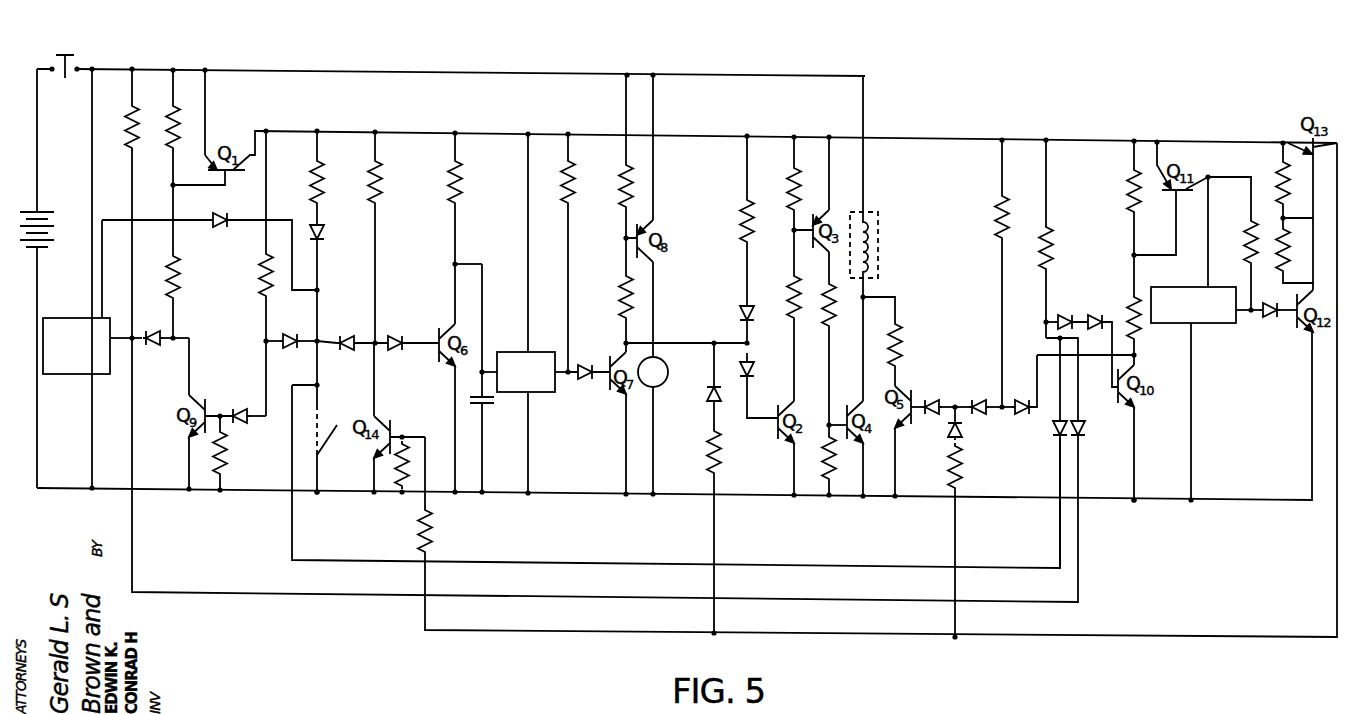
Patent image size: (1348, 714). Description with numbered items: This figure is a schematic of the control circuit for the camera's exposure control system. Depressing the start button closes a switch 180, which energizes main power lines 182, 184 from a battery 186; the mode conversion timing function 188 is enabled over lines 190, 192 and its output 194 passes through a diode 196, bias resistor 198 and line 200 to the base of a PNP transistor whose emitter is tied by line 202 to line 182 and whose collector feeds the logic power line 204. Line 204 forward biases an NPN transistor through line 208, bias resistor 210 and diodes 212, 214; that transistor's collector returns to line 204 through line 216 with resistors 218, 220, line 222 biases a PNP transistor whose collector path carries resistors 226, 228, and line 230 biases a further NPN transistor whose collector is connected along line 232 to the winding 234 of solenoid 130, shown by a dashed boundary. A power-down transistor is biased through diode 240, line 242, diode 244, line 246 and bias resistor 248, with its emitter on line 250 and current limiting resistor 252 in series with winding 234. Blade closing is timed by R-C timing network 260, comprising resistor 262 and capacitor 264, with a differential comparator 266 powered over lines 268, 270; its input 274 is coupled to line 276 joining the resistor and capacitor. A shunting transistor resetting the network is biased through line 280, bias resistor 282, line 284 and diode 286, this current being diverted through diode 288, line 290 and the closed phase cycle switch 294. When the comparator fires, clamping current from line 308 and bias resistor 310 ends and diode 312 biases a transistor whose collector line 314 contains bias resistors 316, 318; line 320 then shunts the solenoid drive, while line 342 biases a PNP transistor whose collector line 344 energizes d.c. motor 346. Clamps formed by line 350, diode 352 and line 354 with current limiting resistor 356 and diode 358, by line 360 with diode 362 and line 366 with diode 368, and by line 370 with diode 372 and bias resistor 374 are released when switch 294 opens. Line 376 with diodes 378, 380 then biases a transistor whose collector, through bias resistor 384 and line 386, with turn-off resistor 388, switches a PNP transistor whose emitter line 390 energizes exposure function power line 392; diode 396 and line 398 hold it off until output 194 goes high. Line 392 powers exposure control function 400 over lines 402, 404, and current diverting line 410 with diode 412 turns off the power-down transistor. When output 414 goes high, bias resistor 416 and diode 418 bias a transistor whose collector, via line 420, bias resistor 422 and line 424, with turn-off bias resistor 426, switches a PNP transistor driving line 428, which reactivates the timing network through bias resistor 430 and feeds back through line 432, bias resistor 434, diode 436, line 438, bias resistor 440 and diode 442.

The solenoid 130 is at (878, 248).
The switch 180 is at (69, 58).
The main power line 182 is at (392, 71).
The main power line 184 is at (252, 492).
The battery 186 is at (38, 198).
The mode conversion timing function 188 is at (78, 297).
The line 190 is at (92, 132).
The line 192 is at (92, 424).
The output 194 is at (132, 344).
The diode 196 is at (156, 342).
The bias resistor 198 is at (175, 296).
The line 200 is at (177, 188).
The line 202 is at (205, 91).
The logic power line 204 is at (405, 131).
The line 208 is at (747, 155).
The bias resistor 210 is at (747, 236).
The diode 212 is at (747, 315).
The diode 214 is at (749, 366).
The line 216 is at (794, 308).
The resistor 218 is at (795, 327).
The resistor 220 is at (792, 174).
The line 222 is at (804, 241).
The resistor 226 is at (830, 326).
The resistor 228 is at (830, 492).
The line 230 is at (838, 414).
The line 232 is at (874, 298).
The winding 234 is at (870, 214).
The diode 240 is at (930, 399).
The line 242 is at (966, 399).
The diode 244 is at (992, 419).
The line 246 is at (1002, 302).
The bias resistor 248 is at (1000, 214).
The line 250 is at (896, 454).
The current limiting resistor 252 is at (899, 348).
The R-C timing network 260 is at (512, 246).
The resistor 262 is at (458, 173).
The capacitor 264 is at (484, 402).
The differential comparator 266 is at (546, 351).
The line 268 is at (526, 232).
The line 270 is at (528, 442).
The input line 274 is at (484, 368).
The line 276 is at (483, 294).
The line 280 is at (376, 215).
The bias resistor 282 is at (378, 171).
The line 284 is at (428, 336).
The diode 286 is at (391, 339).
The diode 288 is at (343, 339).
The line 290 is at (319, 366).
The phase cycle switch 294 is at (332, 440).
The line 308 is at (568, 248).
The bias resistor 310 is at (568, 169).
The diode 312 is at (586, 366).
The line 314 is at (626, 272).
The bias resistor 316 is at (625, 302).
The bias resistor 318 is at (626, 173).
The line 320 is at (674, 343).
The line 342 is at (626, 236).
The line 344 is at (260, 272).
The d.c. motor 346 is at (666, 375).
The line 350 is at (102, 220).
The diode 352 is at (227, 216).
The line 354 is at (320, 263).
The current limiting resistor 356 is at (320, 171).
The diode 358 is at (322, 232).
The line 360 is at (260, 372).
The diode 362 is at (242, 422).
The line 366 is at (280, 334).
The diode 368 is at (298, 347).
The line 370 is at (334, 561).
The diode 372 is at (565, 374).
The bias resistor 374 is at (1050, 246).
The line 376 is at (1058, 316).
The diode 378 is at (1046, 337).
The diode 380 is at (1095, 318).
The bias resistor 384 is at (1137, 334).
The line 386 is at (1174, 226).
The resistor 388 is at (1129, 200).
The line 390 is at (1159, 155).
The exposure function power line 392 is at (1236, 170).
The diode 396 is at (1081, 424).
The line 398 is at (132, 530).
The exposure control function 400 is at (1220, 325).
The line 402 is at (1208, 213).
The line 404 is at (1191, 421).
The current diverting line 410 is at (1044, 360).
The diode 412 is at (1022, 397).
The output line 414 is at (1251, 312).
The bias resistor 416 is at (1251, 239).
The diode 418 is at (1270, 303).
The line 420 is at (1288, 282).
The bias resistor 422 is at (1286, 246).
The line 424 is at (1312, 214).
The turn-off bias resistor 426 is at (1283, 159).
The line 428 is at (1337, 360).
The bias resistor 430 is at (428, 535).
The line 432 is at (955, 532).
The bias resistor 434 is at (963, 466).
The diode 436 is at (963, 432).
The line 438 is at (712, 534).
The bias resistor 440 is at (716, 450).
The diode 442 is at (708, 392).